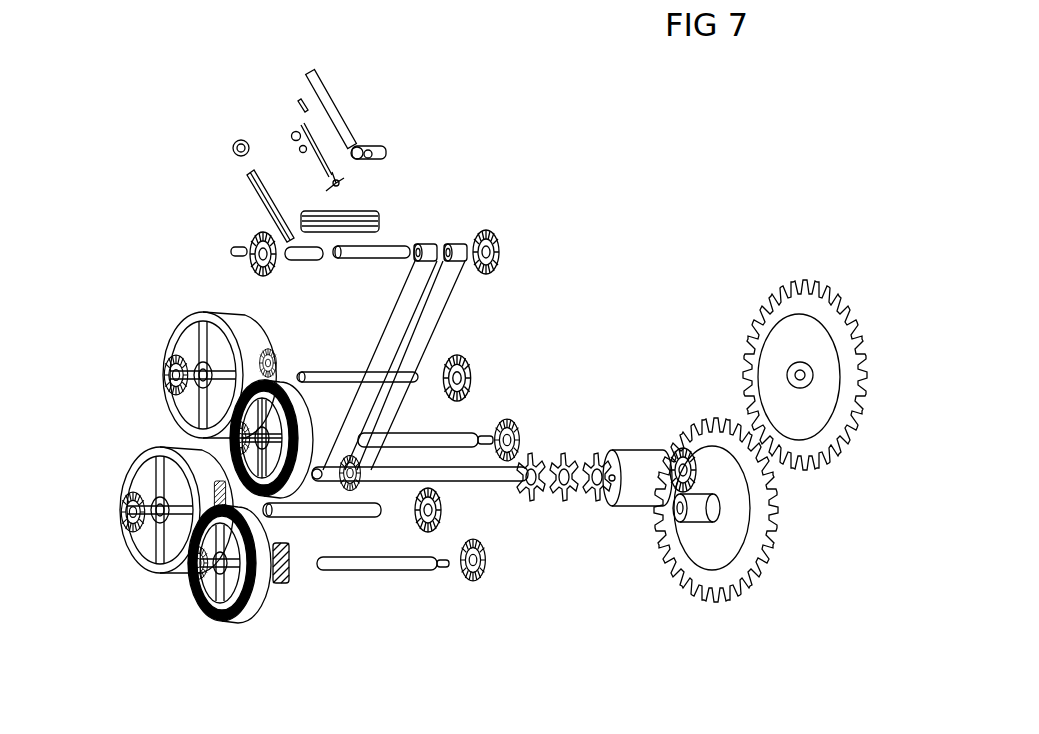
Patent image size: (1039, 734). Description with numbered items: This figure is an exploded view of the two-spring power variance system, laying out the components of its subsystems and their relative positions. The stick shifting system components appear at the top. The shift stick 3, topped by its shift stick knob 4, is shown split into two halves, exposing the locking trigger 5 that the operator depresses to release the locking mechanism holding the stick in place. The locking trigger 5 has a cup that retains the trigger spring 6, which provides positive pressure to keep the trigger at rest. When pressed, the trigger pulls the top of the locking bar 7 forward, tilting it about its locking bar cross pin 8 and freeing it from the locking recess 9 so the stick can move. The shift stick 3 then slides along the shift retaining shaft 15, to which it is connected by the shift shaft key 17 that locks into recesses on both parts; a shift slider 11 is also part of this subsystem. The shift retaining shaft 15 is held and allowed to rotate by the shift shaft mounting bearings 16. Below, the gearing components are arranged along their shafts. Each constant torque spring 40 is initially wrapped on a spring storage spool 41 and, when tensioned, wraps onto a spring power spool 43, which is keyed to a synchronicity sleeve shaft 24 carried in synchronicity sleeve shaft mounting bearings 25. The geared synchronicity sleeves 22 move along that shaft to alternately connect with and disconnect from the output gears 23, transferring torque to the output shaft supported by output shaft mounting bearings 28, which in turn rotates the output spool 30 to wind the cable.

The shift stick 3 is at (347, 116).
The shift stick knob 4 is at (235, 146).
The locking trigger 5 is at (283, 123).
The trigger spring 6 is at (300, 98).
The locking bar 7 is at (344, 180).
The locking bar cross pin 8 is at (289, 135).
The locking recess 9 is at (384, 211).
The shift slider 11 is at (432, 238).
The shift retaining shaft 15 is at (402, 233).
The shift shaft mounting bearings 16 is at (257, 230).
The shift shaft key 17 is at (227, 248).
The geared synchronicity sleeves 22 is at (853, 438).
The output gear 23 is at (588, 452).
The synchronicity sleeve shaft 24 is at (424, 366).
The synchronicity sleeve shaft mounting bearings 25 is at (267, 347).
The output shaft mounting bearings 28 is at (692, 441).
The output spool 30 is at (647, 450).
The constant torque spring 40 is at (202, 620).
The spring storage spool 41 is at (286, 481).
The spring power spool 43 is at (180, 320).